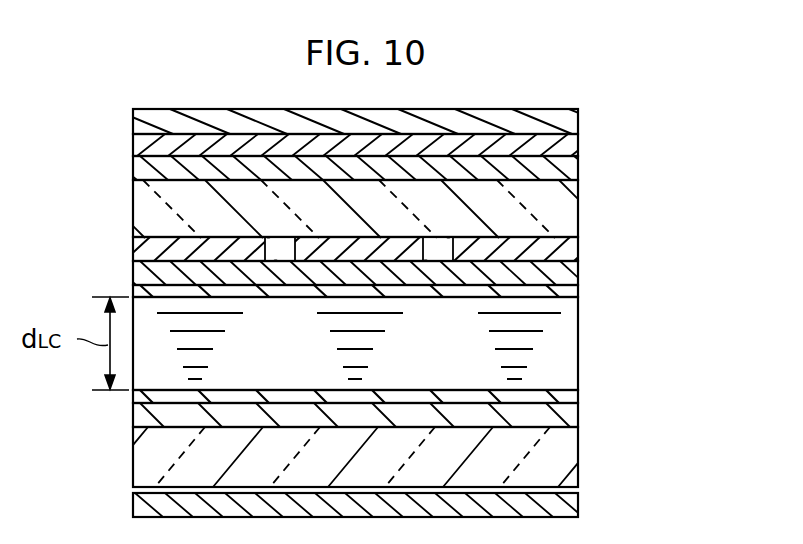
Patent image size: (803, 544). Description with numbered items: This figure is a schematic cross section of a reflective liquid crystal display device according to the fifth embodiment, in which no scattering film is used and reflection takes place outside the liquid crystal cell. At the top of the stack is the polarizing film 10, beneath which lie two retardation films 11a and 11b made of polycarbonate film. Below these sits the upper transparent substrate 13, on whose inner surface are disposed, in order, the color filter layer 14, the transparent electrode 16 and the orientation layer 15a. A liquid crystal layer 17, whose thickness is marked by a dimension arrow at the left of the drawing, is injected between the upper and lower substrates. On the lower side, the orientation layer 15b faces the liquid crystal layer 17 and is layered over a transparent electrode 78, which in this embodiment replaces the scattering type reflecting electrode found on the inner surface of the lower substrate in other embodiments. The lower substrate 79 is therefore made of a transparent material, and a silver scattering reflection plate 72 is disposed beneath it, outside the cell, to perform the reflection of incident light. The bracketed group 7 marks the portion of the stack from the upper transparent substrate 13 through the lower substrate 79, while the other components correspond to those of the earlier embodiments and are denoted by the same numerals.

The polarizing film 10 is at (578, 120).
The retardation film 11a is at (578, 140).
The retardation film 11b is at (578, 172).
The upper transparent substrate 13 is at (578, 215).
The color filter layer 14 is at (578, 252).
The transparent electrode 16 is at (578, 270).
The orientation layer 15a is at (578, 297).
The liquid crystal layer 17 is at (578, 338).
The orientation layer 15b is at (578, 393).
The transparent electrode 78 is at (578, 415).
The lower substrate 79 is at (392, 457).
The scattering reflection plate 72 is at (578, 503).
The liquid crystal display panel 7 is at (420, 333).